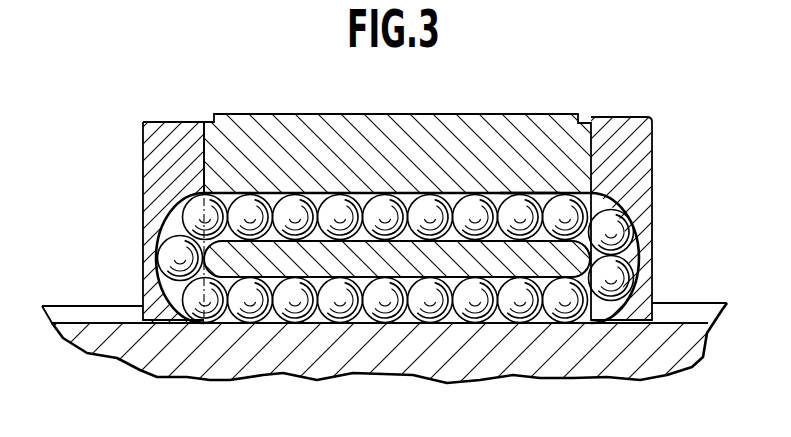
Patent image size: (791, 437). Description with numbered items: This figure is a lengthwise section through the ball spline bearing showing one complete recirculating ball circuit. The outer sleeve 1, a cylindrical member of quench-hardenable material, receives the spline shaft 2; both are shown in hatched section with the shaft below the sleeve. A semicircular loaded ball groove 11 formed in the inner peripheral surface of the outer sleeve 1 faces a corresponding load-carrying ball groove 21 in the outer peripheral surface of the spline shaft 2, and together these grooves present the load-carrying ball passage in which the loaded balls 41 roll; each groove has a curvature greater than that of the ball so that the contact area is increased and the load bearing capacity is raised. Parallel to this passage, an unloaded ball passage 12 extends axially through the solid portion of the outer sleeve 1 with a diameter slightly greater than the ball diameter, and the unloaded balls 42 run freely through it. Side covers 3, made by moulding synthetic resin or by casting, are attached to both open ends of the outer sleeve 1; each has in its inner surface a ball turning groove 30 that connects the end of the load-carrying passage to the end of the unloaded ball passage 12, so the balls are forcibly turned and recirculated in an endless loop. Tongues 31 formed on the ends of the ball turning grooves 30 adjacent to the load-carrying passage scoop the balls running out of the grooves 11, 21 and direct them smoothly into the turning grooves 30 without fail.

The outer sleeve 1 is at (301, 141).
The spline shaft 2 is at (312, 350).
The side cover 3 is at (163, 178).
The loaded ball groove 11 is at (525, 222).
The unloaded ball passage 12 is at (450, 191).
The load-carrying ball groove 21 is at (92, 323).
The ball turning groove 30 is at (171, 259).
The tongue 31 is at (184, 318).
The balls (load-carrying) 41 is at (387, 292).
The balls (unloaded) 42 is at (343, 213).